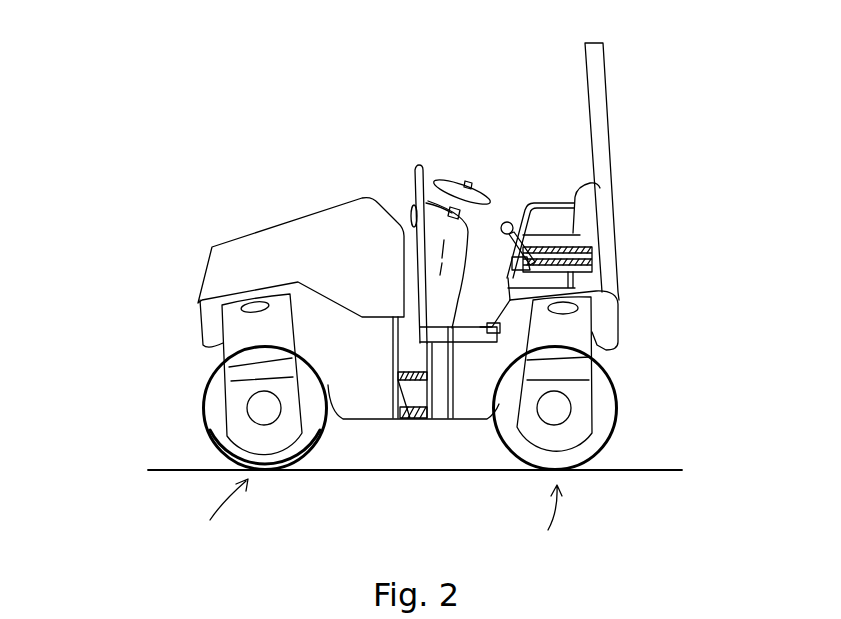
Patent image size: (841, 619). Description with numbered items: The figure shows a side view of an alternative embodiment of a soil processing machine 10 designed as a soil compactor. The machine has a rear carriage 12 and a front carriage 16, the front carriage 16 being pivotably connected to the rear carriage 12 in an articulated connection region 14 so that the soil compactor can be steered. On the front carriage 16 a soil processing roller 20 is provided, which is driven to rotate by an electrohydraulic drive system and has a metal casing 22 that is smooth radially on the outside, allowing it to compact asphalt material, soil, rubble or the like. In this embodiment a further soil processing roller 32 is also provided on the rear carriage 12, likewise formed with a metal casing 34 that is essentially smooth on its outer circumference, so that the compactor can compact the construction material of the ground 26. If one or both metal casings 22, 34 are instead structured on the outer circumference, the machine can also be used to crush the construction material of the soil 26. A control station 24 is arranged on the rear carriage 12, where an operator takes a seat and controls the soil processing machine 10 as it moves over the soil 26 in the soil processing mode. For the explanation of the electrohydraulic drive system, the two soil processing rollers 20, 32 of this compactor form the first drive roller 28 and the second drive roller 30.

The soil processing machine 10 is at (274, 119).
The rear carriage 12 is at (631, 316).
The articulated connection region 14 is at (410, 420).
The front carriage 16 is at (255, 226).
The soil processing roller 20 is at (206, 391).
The metal casing 22 is at (216, 452).
The control station 24 is at (522, 155).
The soil 26 is at (150, 468).
The first drive roller 28 is at (210, 518).
The second drive roller 30 is at (551, 527).
The soil processing roller 32 is at (606, 448).
The metal casing 34 is at (615, 393).